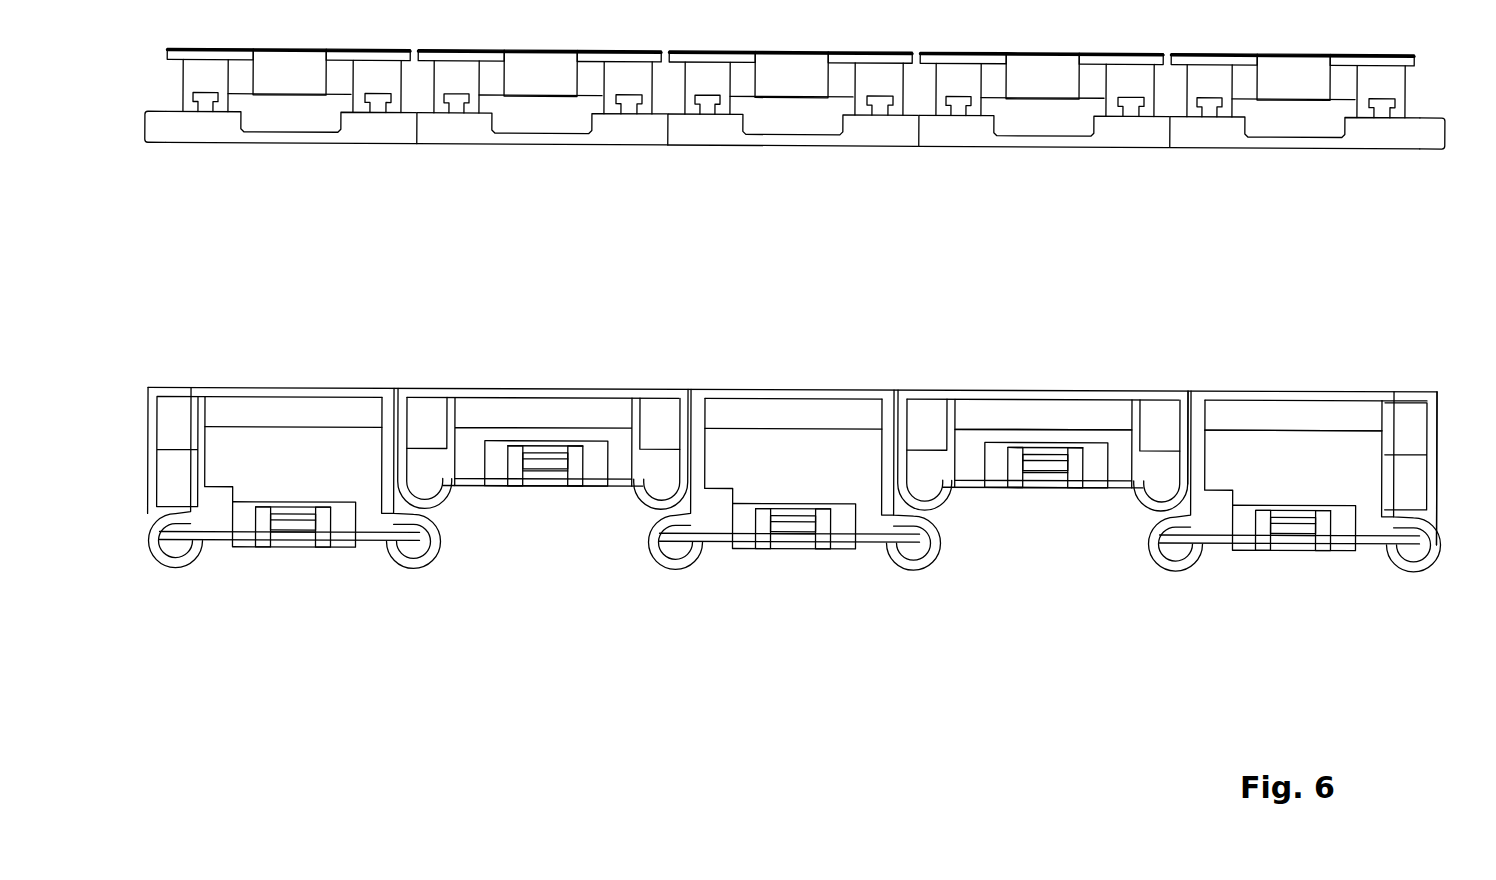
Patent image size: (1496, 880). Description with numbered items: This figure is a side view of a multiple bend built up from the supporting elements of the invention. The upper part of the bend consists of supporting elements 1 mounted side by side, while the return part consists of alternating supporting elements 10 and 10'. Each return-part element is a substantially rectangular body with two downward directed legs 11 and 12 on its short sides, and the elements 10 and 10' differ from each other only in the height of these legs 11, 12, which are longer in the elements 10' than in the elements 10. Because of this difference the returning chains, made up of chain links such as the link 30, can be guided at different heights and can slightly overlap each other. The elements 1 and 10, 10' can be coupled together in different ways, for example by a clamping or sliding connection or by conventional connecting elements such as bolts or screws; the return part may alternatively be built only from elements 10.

The supporting element 1 is at (383, 123).
The chain link 30 is at (798, 50).
The supporting element 10 is at (793, 421).
The supporting element 10' is at (794, 451).
The leg 11 is at (1127, 438).
The leg 12 is at (985, 429).